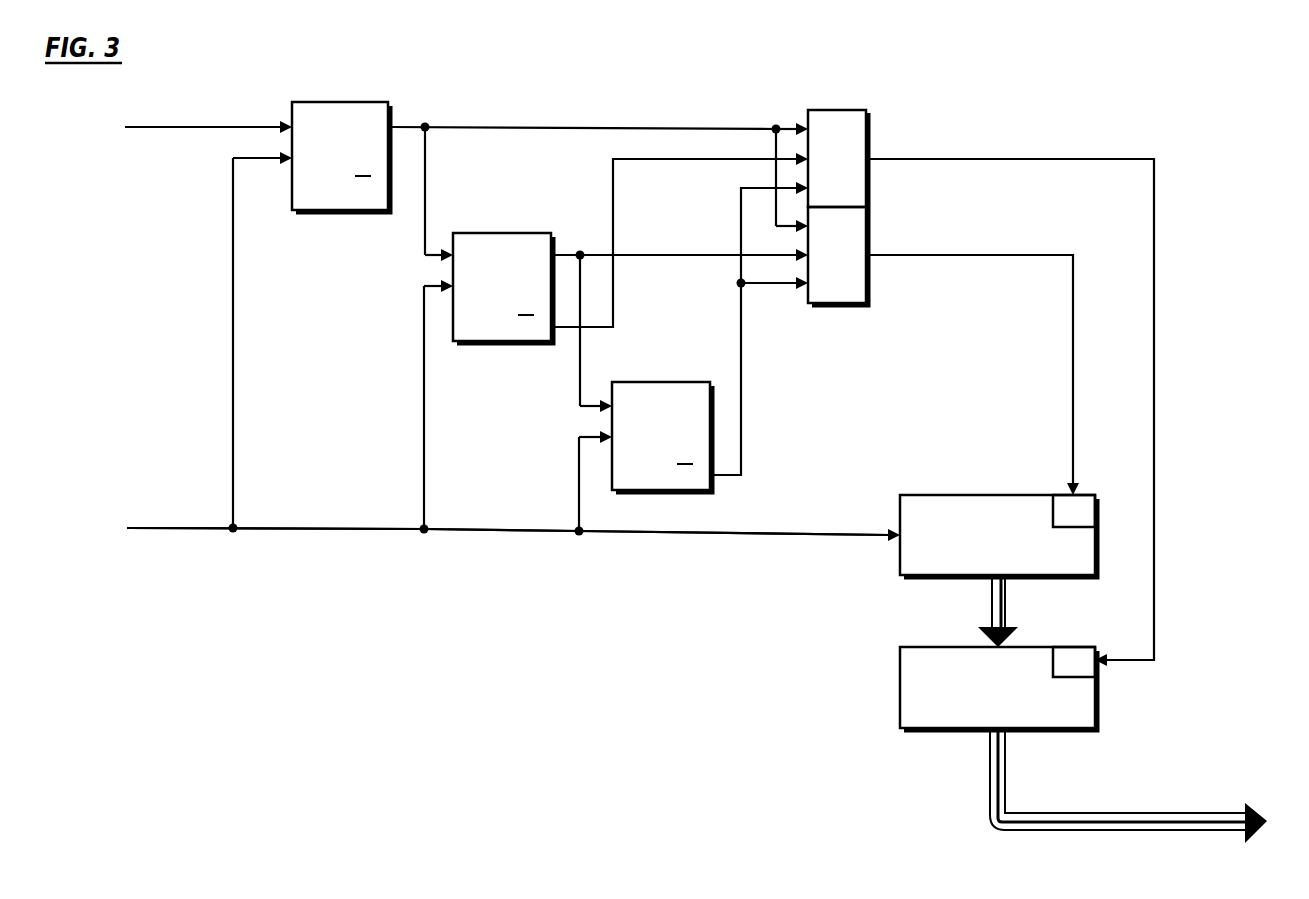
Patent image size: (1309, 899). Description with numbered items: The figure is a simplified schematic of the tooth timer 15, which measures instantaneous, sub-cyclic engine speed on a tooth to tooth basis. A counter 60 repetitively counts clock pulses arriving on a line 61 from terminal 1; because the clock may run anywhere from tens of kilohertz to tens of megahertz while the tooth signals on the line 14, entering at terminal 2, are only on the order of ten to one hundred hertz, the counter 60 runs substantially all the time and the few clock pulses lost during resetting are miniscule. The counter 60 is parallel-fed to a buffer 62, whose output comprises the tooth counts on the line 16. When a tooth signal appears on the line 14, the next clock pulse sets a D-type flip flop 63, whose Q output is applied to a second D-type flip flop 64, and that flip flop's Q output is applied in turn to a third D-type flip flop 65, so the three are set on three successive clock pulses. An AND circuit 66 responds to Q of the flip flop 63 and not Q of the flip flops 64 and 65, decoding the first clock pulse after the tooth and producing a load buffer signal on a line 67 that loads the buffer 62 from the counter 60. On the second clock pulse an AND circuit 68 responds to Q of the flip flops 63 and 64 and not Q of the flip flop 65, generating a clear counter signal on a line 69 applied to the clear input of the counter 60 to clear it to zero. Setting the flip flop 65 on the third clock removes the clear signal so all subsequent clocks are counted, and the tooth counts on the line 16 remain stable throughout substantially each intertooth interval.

The clock input terminal 1 is at (499, 522).
The tooth signal input terminal 2 is at (194, 121).
The line 14 is at (247, 127).
The tooth timer 15 is at (1037, 108).
The line 16 is at (1148, 822).
The counter 60 is at (970, 495).
The line 61 is at (763, 533).
The buffer 62 is at (900, 686).
The D-type flip flop 63 is at (337, 102).
The D-type flip flop 64 is at (502, 233).
The D-type flip flop 65 is at (655, 382).
The AND circuit 66 is at (833, 110).
The line 67 is at (1098, 159).
The AND circuit 68 is at (838, 305).
The line 69 is at (1073, 355).